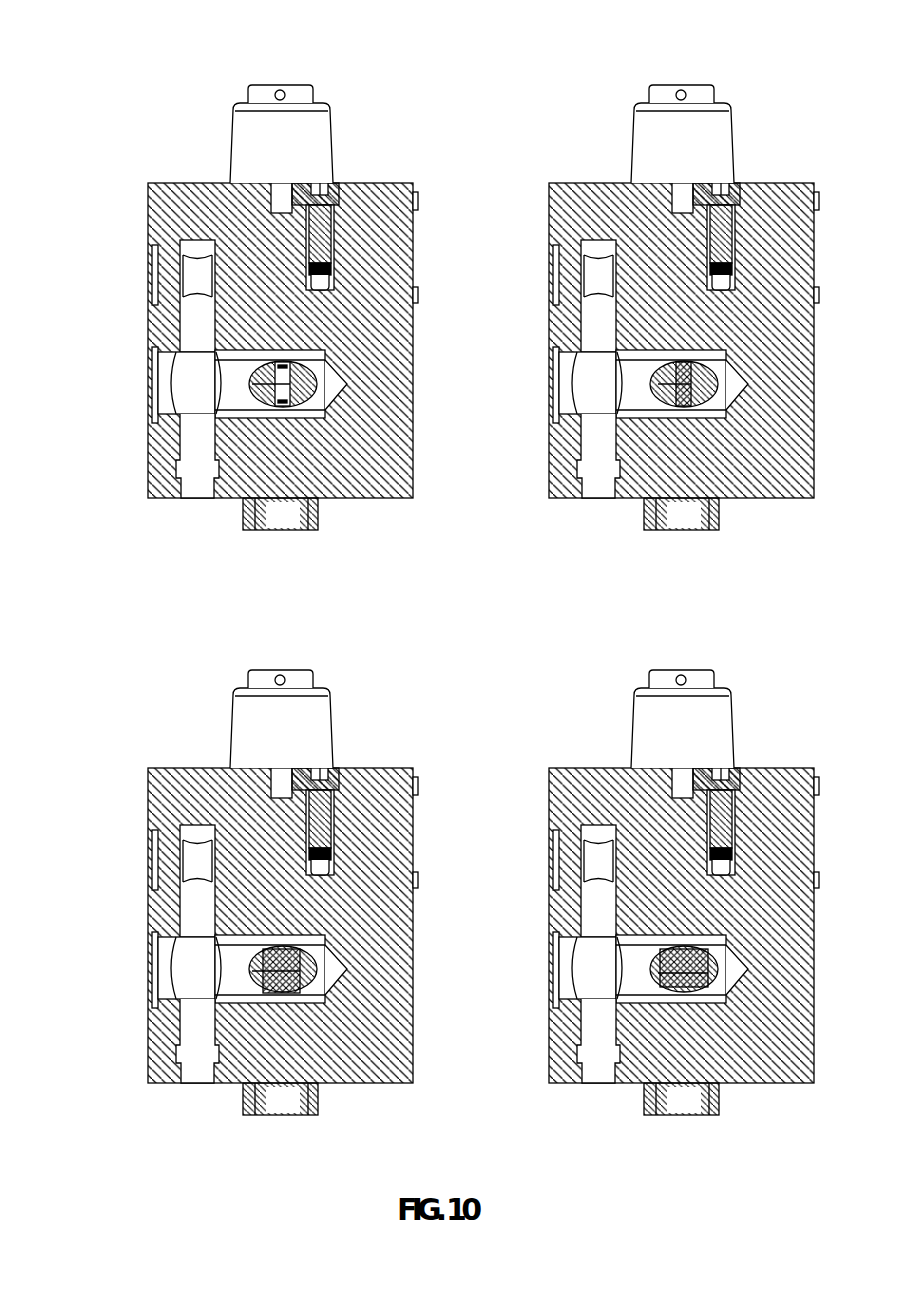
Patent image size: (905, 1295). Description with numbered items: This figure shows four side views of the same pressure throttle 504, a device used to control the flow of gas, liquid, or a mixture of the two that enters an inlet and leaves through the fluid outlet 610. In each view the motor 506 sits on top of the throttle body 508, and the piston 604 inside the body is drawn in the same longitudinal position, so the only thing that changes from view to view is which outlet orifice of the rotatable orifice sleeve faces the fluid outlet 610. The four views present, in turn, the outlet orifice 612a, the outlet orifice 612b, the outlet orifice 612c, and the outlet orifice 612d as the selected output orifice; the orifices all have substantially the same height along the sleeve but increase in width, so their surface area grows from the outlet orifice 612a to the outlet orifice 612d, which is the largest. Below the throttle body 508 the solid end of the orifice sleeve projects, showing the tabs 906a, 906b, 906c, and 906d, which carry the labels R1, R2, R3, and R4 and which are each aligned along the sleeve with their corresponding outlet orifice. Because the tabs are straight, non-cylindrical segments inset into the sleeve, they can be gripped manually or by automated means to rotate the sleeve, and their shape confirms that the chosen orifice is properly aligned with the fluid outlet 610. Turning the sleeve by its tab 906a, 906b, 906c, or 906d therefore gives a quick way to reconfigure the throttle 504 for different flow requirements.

The pressure throttle 504 is at (116, 51).
The motor 506 is at (240, 152).
The throttle body 508 is at (215, 198).
The piston 604 is at (283, 362).
The fluid outlet 610 is at (263, 370).
The outlet orifice 612a is at (267, 378).
The outlet orifice 612b is at (571, 428).
The outlet orifice 612c is at (175, 1014).
The outlet orifice 612d is at (580, 1014).
The tab 906a is at (282, 530).
The tab 906b is at (711, 532).
The tab 906c is at (308, 1117).
The tab 906d is at (711, 1117).